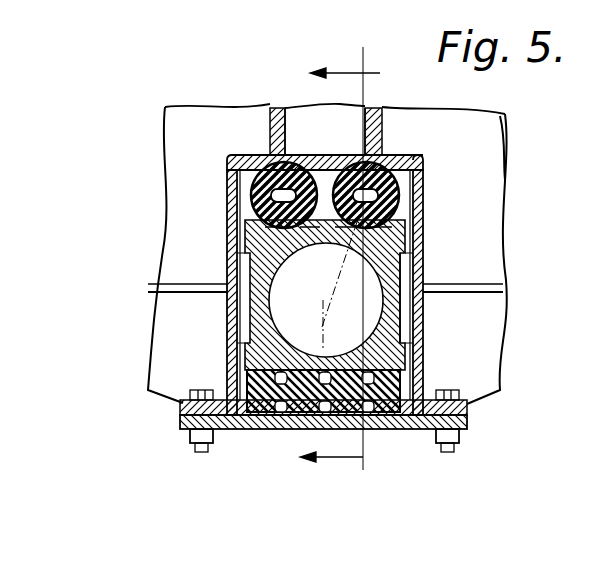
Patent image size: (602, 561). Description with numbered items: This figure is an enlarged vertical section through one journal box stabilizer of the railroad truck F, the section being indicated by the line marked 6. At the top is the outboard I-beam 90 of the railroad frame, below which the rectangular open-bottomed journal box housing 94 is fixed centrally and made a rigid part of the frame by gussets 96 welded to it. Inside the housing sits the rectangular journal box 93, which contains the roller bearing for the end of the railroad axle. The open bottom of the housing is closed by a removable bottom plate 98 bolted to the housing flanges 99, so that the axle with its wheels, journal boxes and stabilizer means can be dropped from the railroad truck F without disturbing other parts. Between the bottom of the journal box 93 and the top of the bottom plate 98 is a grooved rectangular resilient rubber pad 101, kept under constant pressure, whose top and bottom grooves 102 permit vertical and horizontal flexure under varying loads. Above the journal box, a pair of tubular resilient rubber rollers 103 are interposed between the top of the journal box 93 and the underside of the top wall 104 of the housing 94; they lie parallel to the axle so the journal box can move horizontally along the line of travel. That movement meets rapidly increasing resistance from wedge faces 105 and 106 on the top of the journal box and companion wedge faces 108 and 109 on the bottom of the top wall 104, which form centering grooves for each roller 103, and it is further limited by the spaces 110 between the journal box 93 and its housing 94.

The railroad truck F is at (185, 101).
The I-beam 90 is at (505, 130).
The journal box 93 is at (250, 313).
The journal box housing 94 is at (245, 148).
The gusset 96 is at (300, 117).
The bottom plate 98 is at (236, 430).
The flanges 99 is at (182, 408).
The resilient rubber pad 101 is at (385, 414).
The grooves 102 is at (321, 372).
The tubular resilient rubber rollers 103 is at (250, 193).
The top wall 104 is at (420, 157).
The wedge face 105 is at (245, 216).
The wedge face 106 is at (405, 213).
The wedge face 108 is at (270, 190).
The wedge face 109 is at (400, 186).
The spaces 110 is at (243, 236).
The section line 6- 6 is at (341, 263).